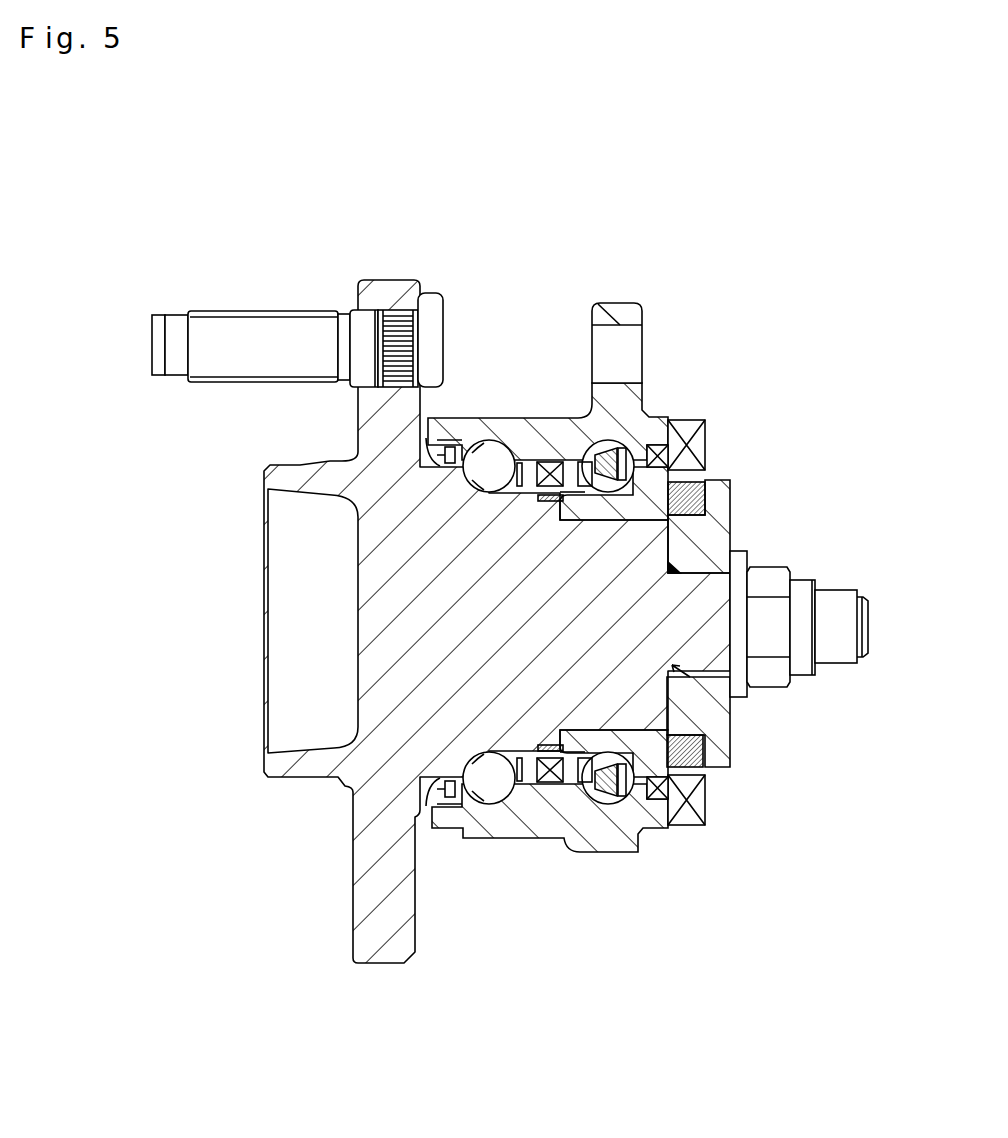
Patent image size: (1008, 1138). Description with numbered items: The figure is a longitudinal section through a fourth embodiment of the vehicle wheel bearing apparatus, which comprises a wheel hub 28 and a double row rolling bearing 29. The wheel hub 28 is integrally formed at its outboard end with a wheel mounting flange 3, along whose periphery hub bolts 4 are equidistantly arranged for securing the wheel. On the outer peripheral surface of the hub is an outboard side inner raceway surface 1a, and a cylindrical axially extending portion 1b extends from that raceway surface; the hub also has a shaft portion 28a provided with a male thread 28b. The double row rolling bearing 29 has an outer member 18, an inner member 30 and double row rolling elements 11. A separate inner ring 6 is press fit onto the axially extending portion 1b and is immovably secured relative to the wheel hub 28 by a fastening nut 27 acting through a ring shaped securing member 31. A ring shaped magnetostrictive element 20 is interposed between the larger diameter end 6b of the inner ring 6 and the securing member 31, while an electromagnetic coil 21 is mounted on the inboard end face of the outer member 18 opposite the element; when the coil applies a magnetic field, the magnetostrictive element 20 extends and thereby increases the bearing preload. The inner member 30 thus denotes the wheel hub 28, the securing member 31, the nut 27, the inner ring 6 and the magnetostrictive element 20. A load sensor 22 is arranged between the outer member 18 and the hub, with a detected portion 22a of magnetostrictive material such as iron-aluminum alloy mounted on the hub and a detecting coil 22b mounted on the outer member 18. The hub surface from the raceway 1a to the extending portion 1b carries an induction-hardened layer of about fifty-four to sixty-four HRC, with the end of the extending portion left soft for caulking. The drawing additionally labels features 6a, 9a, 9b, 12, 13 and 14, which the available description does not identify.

The inner raceway surface 1a is at (423, 513).
The axially extending portion 1b is at (617, 514).
The wheel mounting flange 3 is at (382, 289).
The hub bolts 4 is at (272, 312).
The inner ring 6 is at (677, 800).
The seal inner member 6a is at (640, 797).
The larger diameter end of the inner ring 6b is at (707, 800).
The rolling elements (balls) 9a is at (472, 443).
The outer ring 9b is at (630, 300).
The double row rolling elements 11 is at (482, 790).
The cage 12 is at (528, 784).
The seal 13 is at (441, 832).
The seal member 14 is at (660, 798).
The outer member 18 is at (492, 423).
The magnetostrictive element 20 is at (704, 496).
The electromagnetic coil 21 is at (698, 441).
The load sensor 22 is at (588, 373).
The detected portion 22a is at (531, 460).
The detecting coil 22b is at (558, 461).
The fastening nut 27 is at (763, 678).
The wheel hub 28 is at (313, 466).
The shaft portion 28a is at (712, 598).
The male thread 28b is at (838, 590).
The double row rolling bearing 29 is at (561, 311).
The inner member 30 is at (346, 564).
The securing member 31 is at (721, 519).